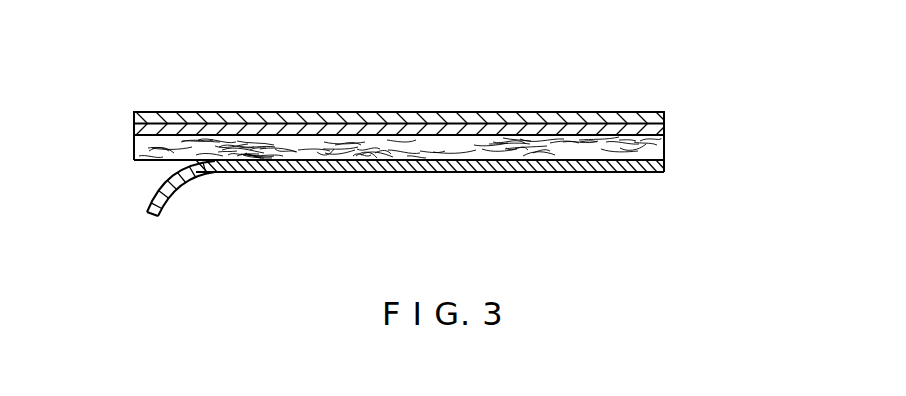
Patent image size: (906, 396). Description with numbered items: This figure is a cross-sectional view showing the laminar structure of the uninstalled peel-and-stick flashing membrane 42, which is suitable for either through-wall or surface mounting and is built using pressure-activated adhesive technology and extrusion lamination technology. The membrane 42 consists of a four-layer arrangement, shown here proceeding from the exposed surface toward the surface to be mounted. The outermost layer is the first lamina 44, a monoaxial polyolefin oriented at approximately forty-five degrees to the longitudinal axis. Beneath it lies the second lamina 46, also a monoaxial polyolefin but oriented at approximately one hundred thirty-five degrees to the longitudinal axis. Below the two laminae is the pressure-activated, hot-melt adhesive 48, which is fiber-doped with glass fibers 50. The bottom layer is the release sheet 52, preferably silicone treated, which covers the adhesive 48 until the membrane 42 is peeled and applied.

The flashing membrane 42 is at (280, 104).
The first lamina 44 is at (664, 120).
The second lamina 46 is at (664, 131).
The pressure-activated hot-melt adhesive 48 is at (664, 148).
The glass fibers 50 is at (140, 162).
The release sheet 52 is at (640, 173).